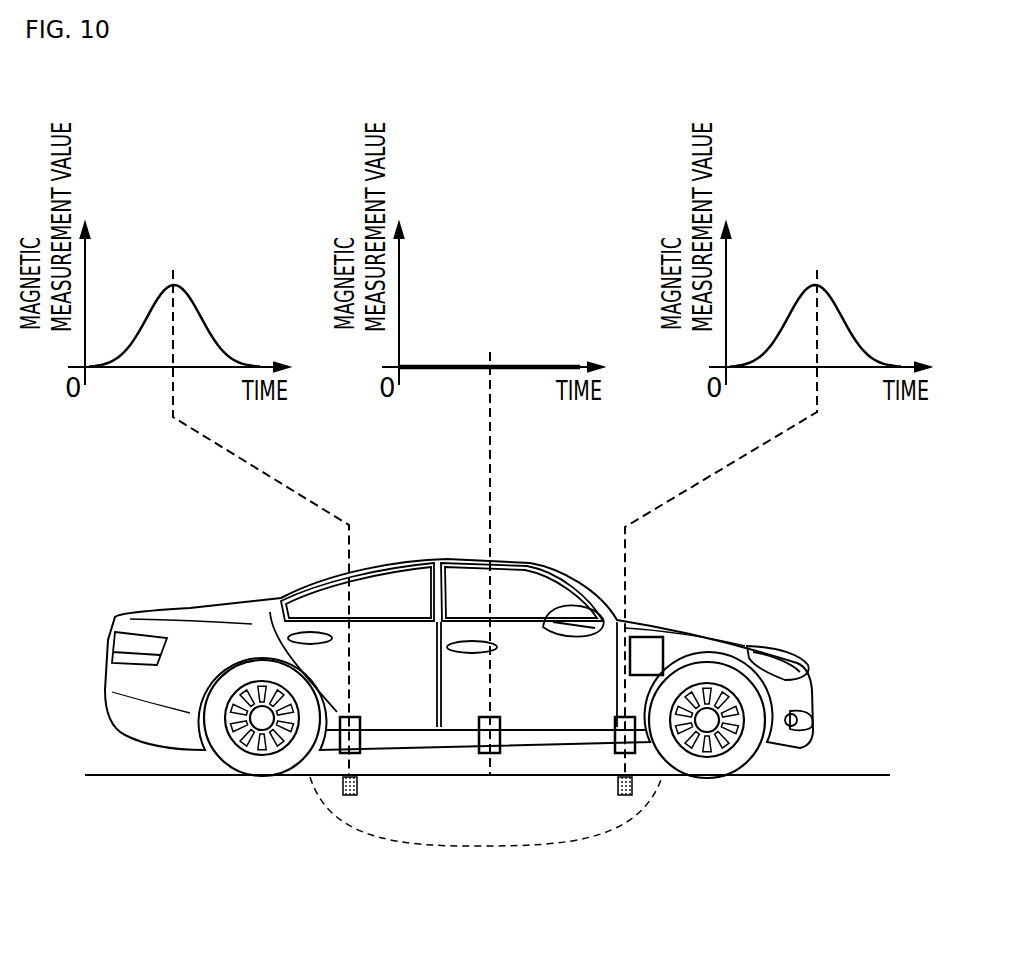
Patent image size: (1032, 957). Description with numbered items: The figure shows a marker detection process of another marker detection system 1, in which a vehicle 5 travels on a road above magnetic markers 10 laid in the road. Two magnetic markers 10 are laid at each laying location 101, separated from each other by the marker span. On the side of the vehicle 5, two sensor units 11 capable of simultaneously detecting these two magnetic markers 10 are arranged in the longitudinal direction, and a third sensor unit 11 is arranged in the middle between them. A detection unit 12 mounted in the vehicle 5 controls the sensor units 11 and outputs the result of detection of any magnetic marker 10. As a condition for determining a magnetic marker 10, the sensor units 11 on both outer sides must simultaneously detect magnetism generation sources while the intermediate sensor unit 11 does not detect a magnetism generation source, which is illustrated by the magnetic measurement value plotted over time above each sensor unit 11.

The marker detection system 1 is at (181, 535).
The vehicle 5 is at (247, 598).
The magnetic marker 10 is at (350, 796).
The sensor unit 11 is at (327, 747).
The detection unit 12 is at (648, 655).
The laying location 101 is at (597, 838).